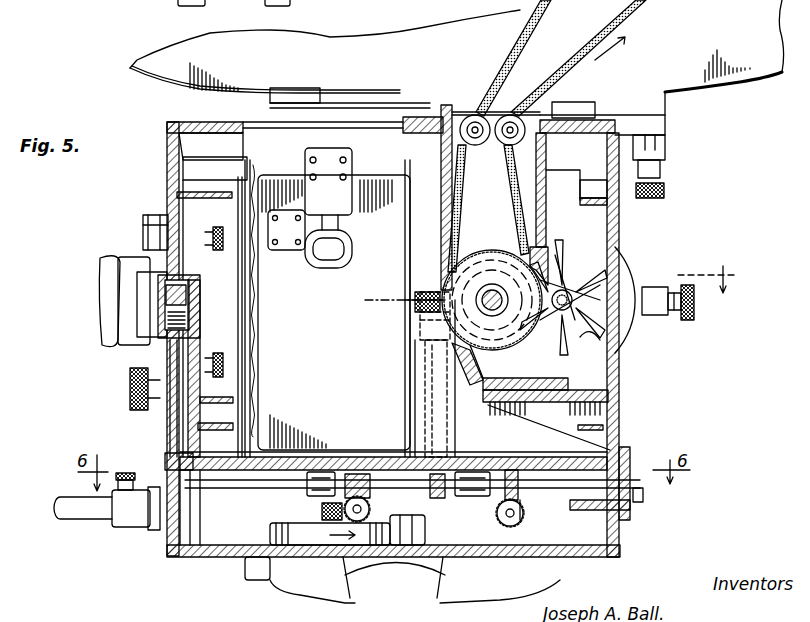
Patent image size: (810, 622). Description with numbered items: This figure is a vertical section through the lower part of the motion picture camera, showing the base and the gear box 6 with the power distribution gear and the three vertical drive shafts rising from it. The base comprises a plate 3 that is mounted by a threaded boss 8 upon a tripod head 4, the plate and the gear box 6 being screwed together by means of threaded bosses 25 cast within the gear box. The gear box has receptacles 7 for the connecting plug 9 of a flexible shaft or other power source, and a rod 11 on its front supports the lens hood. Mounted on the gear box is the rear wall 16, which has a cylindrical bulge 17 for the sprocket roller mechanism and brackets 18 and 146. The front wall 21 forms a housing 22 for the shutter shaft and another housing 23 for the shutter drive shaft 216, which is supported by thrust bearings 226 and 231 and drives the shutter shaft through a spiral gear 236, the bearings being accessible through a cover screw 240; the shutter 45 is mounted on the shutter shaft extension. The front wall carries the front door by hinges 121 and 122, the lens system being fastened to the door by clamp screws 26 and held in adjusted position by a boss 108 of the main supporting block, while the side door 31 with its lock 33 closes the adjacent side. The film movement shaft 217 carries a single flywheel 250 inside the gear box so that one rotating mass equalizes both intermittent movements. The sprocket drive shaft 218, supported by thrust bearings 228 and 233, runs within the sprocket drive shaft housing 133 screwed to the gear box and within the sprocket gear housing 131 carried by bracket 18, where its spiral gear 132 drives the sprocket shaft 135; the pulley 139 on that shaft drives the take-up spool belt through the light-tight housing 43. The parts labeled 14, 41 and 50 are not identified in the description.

The base plate 3 is at (620, 550).
The tripod head 4 is at (435, 595).
The gear box 6 is at (622, 527).
The receptacles 7 is at (643, 502).
The threaded boss 8 is at (425, 528).
The connecting plug 9 is at (405, 276).
The rod 11 is at (85, 508).
The section line 14 is at (554, 288).
The rear wall 16 is at (619, 382).
The cylindrical bulge 17 is at (622, 262).
The bracket 18 is at (545, 395).
The front wall 21 is at (168, 176).
The shutter shaft housing 22 is at (150, 316).
The shutter drive shaft housing 23 is at (165, 460).
The threaded bosses 25 is at (200, 553).
The clamp screws 26 is at (204, 284).
The side door 31 is at (334, 312).
The lock 33 is at (310, 208).
The cover 41 is at (172, 125).
The belt drive housing 43 is at (541, 197).
The shutter 45 is at (238, 178).
The lid 50 is at (690, 78).
The boss 108 is at (198, 400).
The hinge 121 is at (143, 222).
The hinge 122 is at (150, 405).
The sprocket gear housing 131 is at (442, 275).
The spiral gear 132 is at (420, 328).
The sprocket drive shaft housing 133 is at (470, 381).
The sprocket shaft 135 is at (495, 290).
The pulley 139 is at (553, 257).
The bracket 146 is at (580, 337).
The shutter drive shaft 216 is at (175, 425).
The film movement drive shaft 217 is at (322, 515).
The sprocket drive shaft 218 is at (455, 430).
The thrust bearing 226 is at (200, 455).
The thrust bearing 228 is at (470, 452).
The thrust bearing 231 is at (108, 265).
The thrust bearing 233 is at (410, 345).
The spiral gear 236 is at (165, 293).
The cover screw 240 is at (135, 290).
The flywheel 250 is at (270, 533).